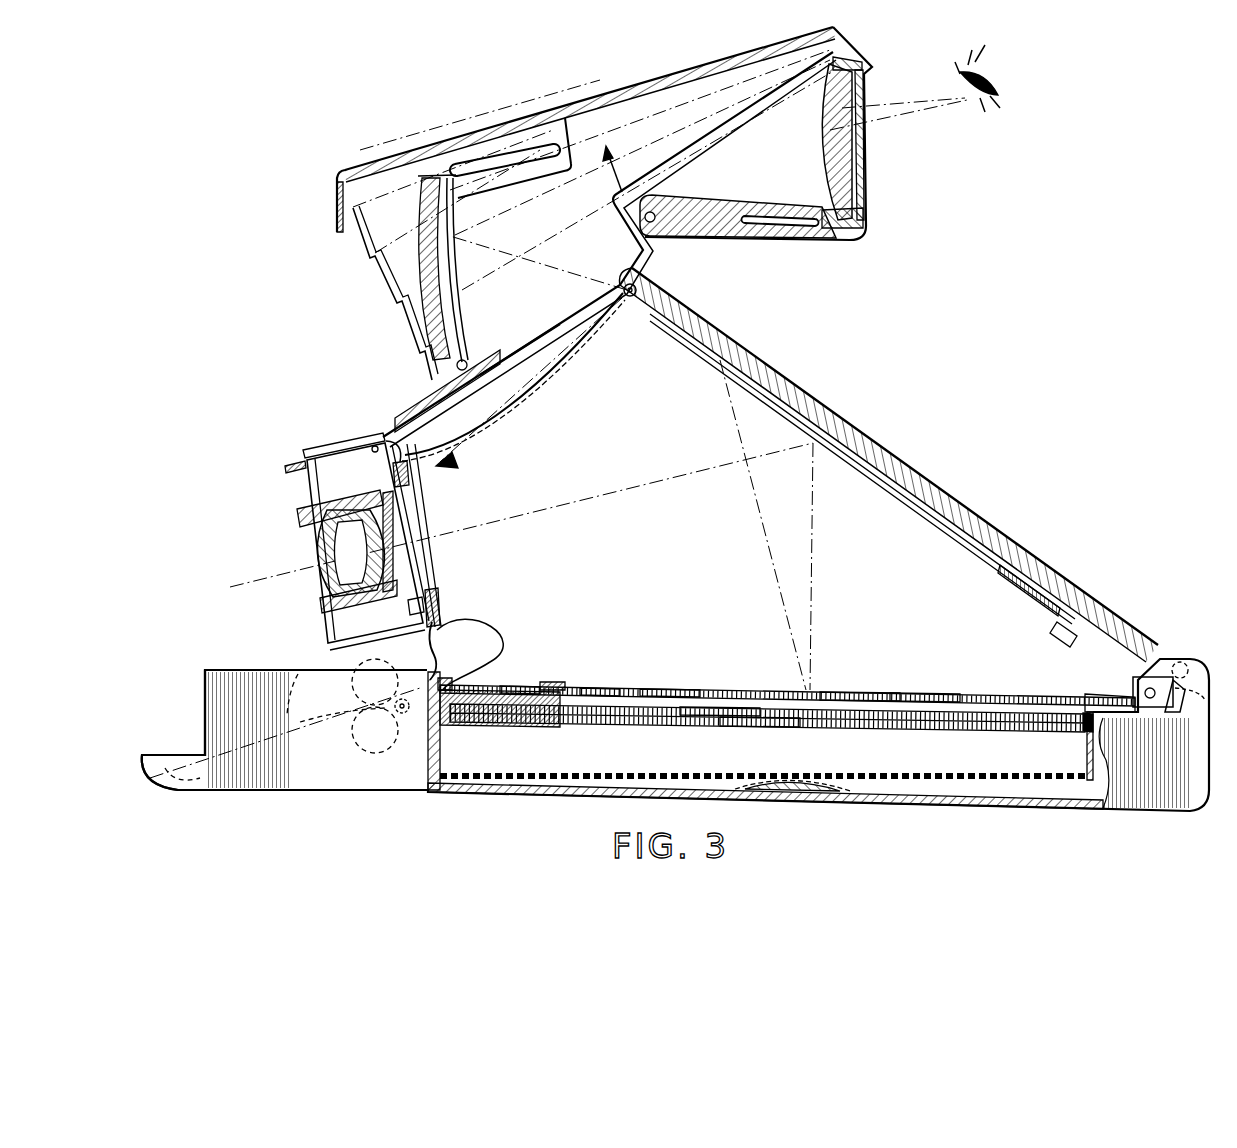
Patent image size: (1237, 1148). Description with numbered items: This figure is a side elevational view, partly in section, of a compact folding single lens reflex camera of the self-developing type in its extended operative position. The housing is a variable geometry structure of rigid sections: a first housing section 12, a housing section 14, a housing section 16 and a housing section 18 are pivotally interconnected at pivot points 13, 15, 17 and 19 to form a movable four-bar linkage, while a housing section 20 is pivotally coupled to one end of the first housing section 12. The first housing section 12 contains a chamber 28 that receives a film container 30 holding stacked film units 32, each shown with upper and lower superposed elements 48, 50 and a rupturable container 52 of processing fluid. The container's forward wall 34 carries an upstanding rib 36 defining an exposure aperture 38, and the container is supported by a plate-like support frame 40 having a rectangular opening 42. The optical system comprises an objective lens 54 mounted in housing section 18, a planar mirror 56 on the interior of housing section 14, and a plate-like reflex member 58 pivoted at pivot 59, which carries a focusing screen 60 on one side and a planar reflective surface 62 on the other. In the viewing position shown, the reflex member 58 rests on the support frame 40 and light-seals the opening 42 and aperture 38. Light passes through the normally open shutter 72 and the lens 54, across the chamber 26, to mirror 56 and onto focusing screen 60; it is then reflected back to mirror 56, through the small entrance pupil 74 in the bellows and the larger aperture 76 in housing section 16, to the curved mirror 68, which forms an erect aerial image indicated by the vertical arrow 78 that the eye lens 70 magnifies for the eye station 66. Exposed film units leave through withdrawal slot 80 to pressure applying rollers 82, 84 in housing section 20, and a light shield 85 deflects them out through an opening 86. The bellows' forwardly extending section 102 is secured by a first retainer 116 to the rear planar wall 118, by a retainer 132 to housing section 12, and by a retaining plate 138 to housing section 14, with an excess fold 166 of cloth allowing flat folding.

The first housing section 12 is at (990, 806).
The pivot point 13 is at (1180, 663).
The housing section 14 is at (1093, 600).
The pivot point 15 is at (623, 283).
The housing section 16 is at (431, 392).
The pivot point 17 is at (370, 436).
The housing section 18 is at (292, 463).
The pivot point 19 is at (432, 690).
The housing section 20 is at (312, 794).
The chamber 26 is at (418, 452).
The chamber 28 is at (876, 788).
The film container 30 is at (1043, 800).
The film unit 32 is at (657, 724).
The forward wall 34 is at (525, 688).
The upstanding rib 36 is at (605, 690).
The exposure aperture 38 is at (660, 688).
The support frame 40 is at (560, 688).
The rectangular opening 42 is at (1070, 703).
The upper superposed element 48 is at (700, 705).
The lower superposed element 50 is at (745, 712).
The rupturable container 52 is at (490, 727).
The objective lens 54 is at (312, 557).
The planar mirror 56 is at (965, 562).
The reflex member 58 is at (952, 676).
The pivot 59 is at (1165, 713).
The focusing screen 60 is at (855, 692).
The planar reflective surface 62 is at (912, 697).
The eye station 66 is at (964, 110).
The curved mirror 68 is at (446, 233).
The eye lens 70 is at (828, 180).
The shutter 72 is at (385, 500).
The entrance pupil 74 is at (596, 320).
The aperture 76 is at (520, 340).
The vertical arrow 78 is at (621, 166).
The withdrawal slot 80 is at (392, 738).
The pressure applying roller 82 is at (372, 665).
The pressure applying roller 84 is at (350, 722).
The light shield 85 is at (298, 676).
The opening 86 is at (188, 800).
The forwardly extending section 102 is at (460, 438).
The first retainer 116 is at (410, 482).
The rear planar wall 118 is at (418, 609).
The retainer 132 is at (447, 683).
The retaining plate 138 is at (1055, 570).
The fold 166 is at (492, 640).